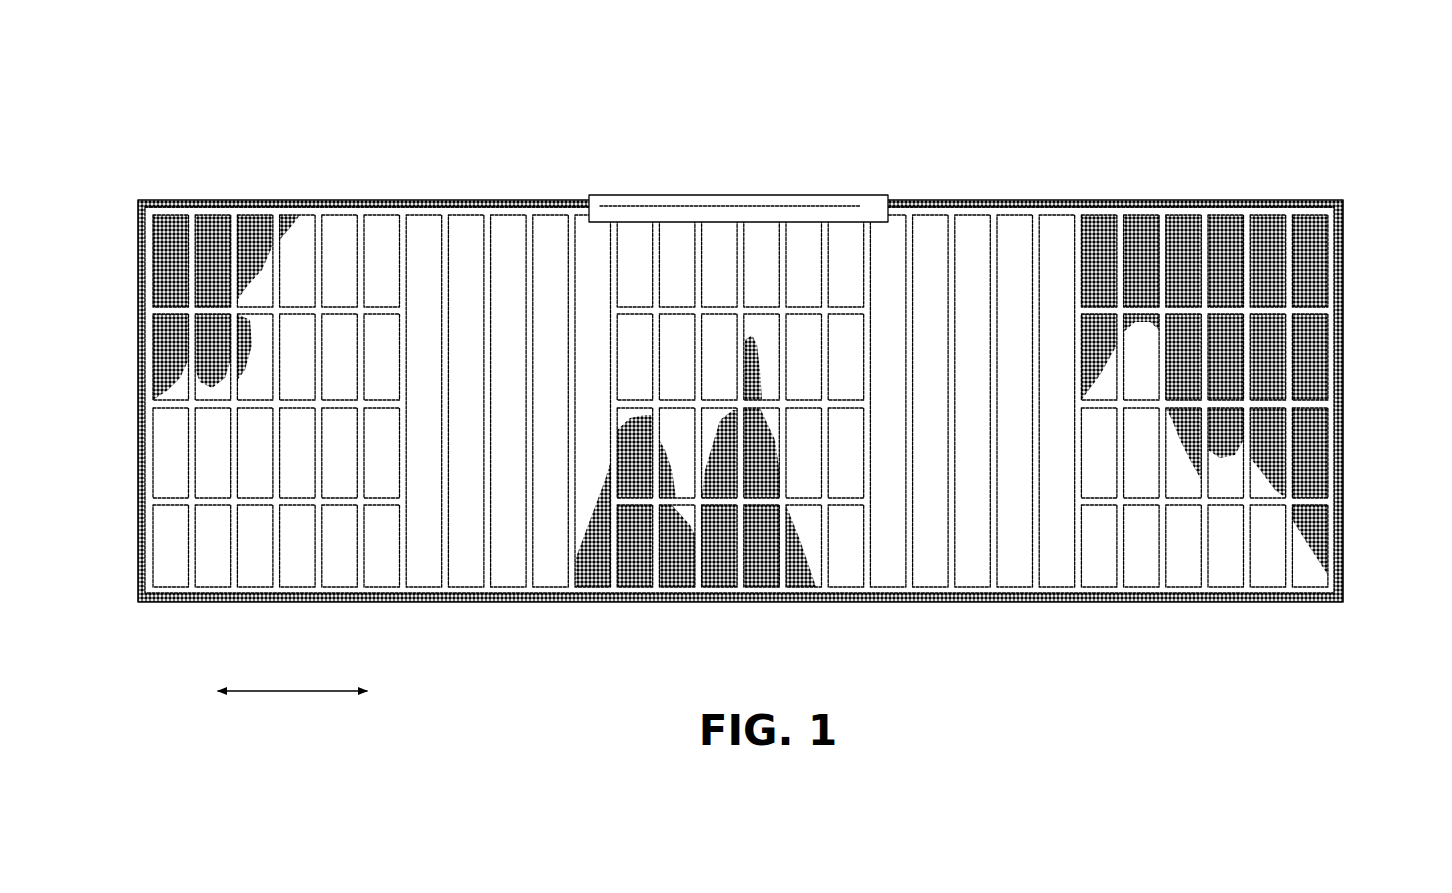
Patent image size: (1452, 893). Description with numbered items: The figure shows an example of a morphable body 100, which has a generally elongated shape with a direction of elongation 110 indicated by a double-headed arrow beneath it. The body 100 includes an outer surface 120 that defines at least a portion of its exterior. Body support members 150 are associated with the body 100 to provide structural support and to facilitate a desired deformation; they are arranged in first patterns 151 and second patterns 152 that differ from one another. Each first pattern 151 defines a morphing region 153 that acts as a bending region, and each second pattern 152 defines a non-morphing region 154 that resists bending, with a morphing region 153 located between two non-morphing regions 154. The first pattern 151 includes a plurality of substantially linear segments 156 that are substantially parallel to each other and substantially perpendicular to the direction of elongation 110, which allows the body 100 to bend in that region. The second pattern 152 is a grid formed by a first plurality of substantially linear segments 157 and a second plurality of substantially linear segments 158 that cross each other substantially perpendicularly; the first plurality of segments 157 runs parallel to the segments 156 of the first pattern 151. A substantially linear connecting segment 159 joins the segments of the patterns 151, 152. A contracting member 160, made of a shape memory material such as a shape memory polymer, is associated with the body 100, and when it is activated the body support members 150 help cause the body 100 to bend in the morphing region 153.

The body 100 is at (168, 140).
The direction of elongation 110 is at (293, 693).
The outer surface 120 is at (168, 262).
The body support member 150 is at (290, 205).
The first pattern 151 is at (610, 610).
The second pattern 152 is at (145, 610).
The morphing region 153 is at (501, 240).
The non-morphing region 154 is at (715, 256).
The plurality of substantially linear segments 156 is at (483, 228).
The first plurality of substantially linear segments 157 is at (270, 225).
The second plurality of substantially linear segments 158 is at (165, 497).
The connecting segment 159 is at (420, 210).
The contracting member 160 is at (862, 205).